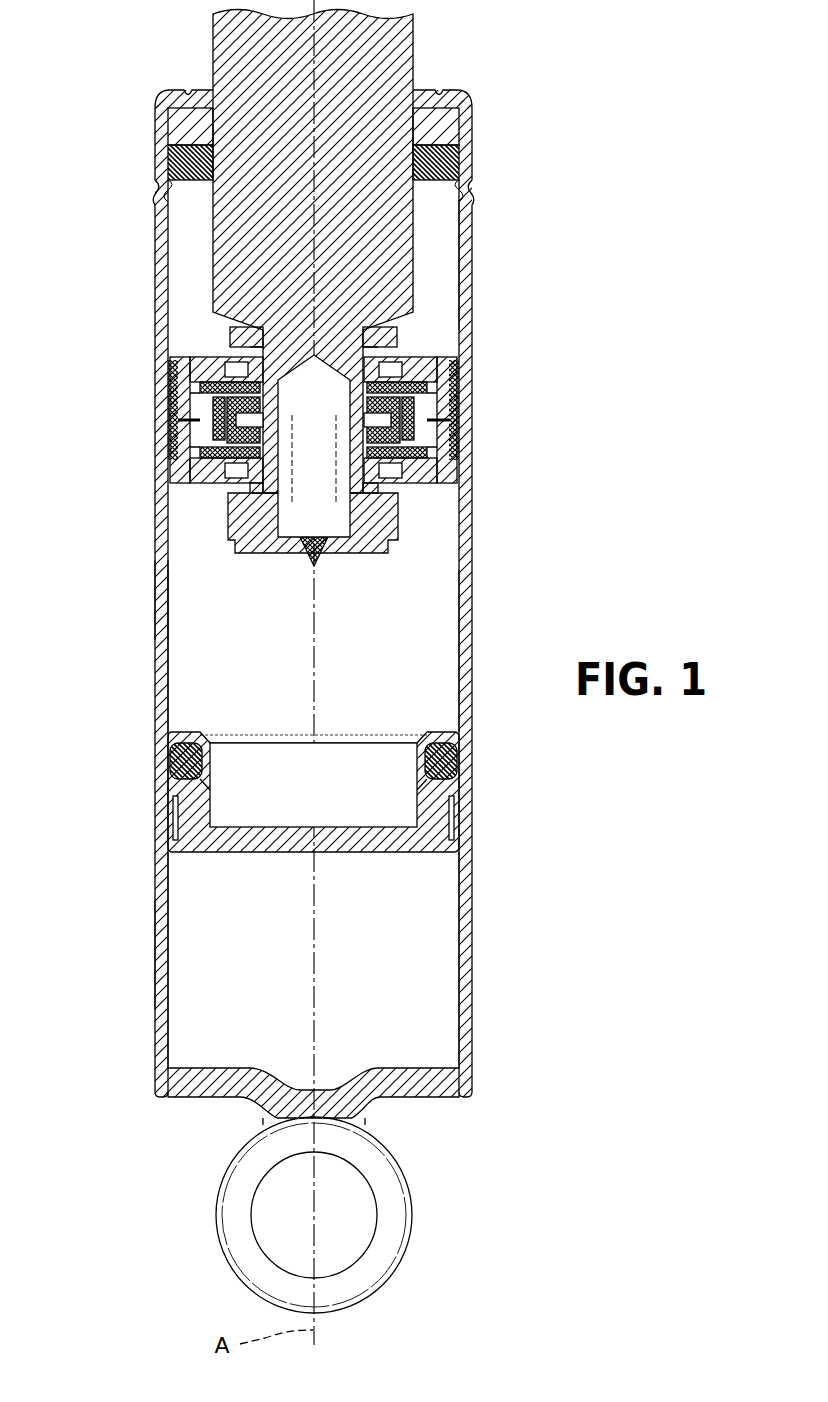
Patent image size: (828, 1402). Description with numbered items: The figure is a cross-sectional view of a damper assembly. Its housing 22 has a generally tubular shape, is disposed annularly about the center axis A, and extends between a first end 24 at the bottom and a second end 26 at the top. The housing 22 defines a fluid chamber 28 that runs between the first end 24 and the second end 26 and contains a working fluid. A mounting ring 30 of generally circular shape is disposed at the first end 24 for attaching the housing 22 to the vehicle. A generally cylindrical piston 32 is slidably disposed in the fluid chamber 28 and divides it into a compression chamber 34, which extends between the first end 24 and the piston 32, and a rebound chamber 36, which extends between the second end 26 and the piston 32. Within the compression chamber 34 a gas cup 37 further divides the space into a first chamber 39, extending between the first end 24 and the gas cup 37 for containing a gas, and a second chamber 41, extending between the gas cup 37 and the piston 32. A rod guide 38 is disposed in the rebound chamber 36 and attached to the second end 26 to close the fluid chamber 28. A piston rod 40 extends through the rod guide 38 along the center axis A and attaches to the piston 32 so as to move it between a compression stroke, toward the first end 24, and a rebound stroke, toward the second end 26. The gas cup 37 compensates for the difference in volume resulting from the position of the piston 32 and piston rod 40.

The housing 22 is at (153, 798).
The first end 24 is at (441, 1098).
The second end 26 is at (188, 92).
The fluid chamber 28 is at (456, 598).
The mounting ring 30 is at (375, 1268).
The piston 32 is at (460, 366).
The compression chamber 34 is at (456, 898).
The rebound chamber 36 is at (459, 226).
The gas cup 37 is at (440, 816).
The rod guide 38 is at (458, 166).
The first chamber 39 is at (166, 942).
The piston rod 40 is at (228, 235).
The second chamber 41 is at (170, 588).